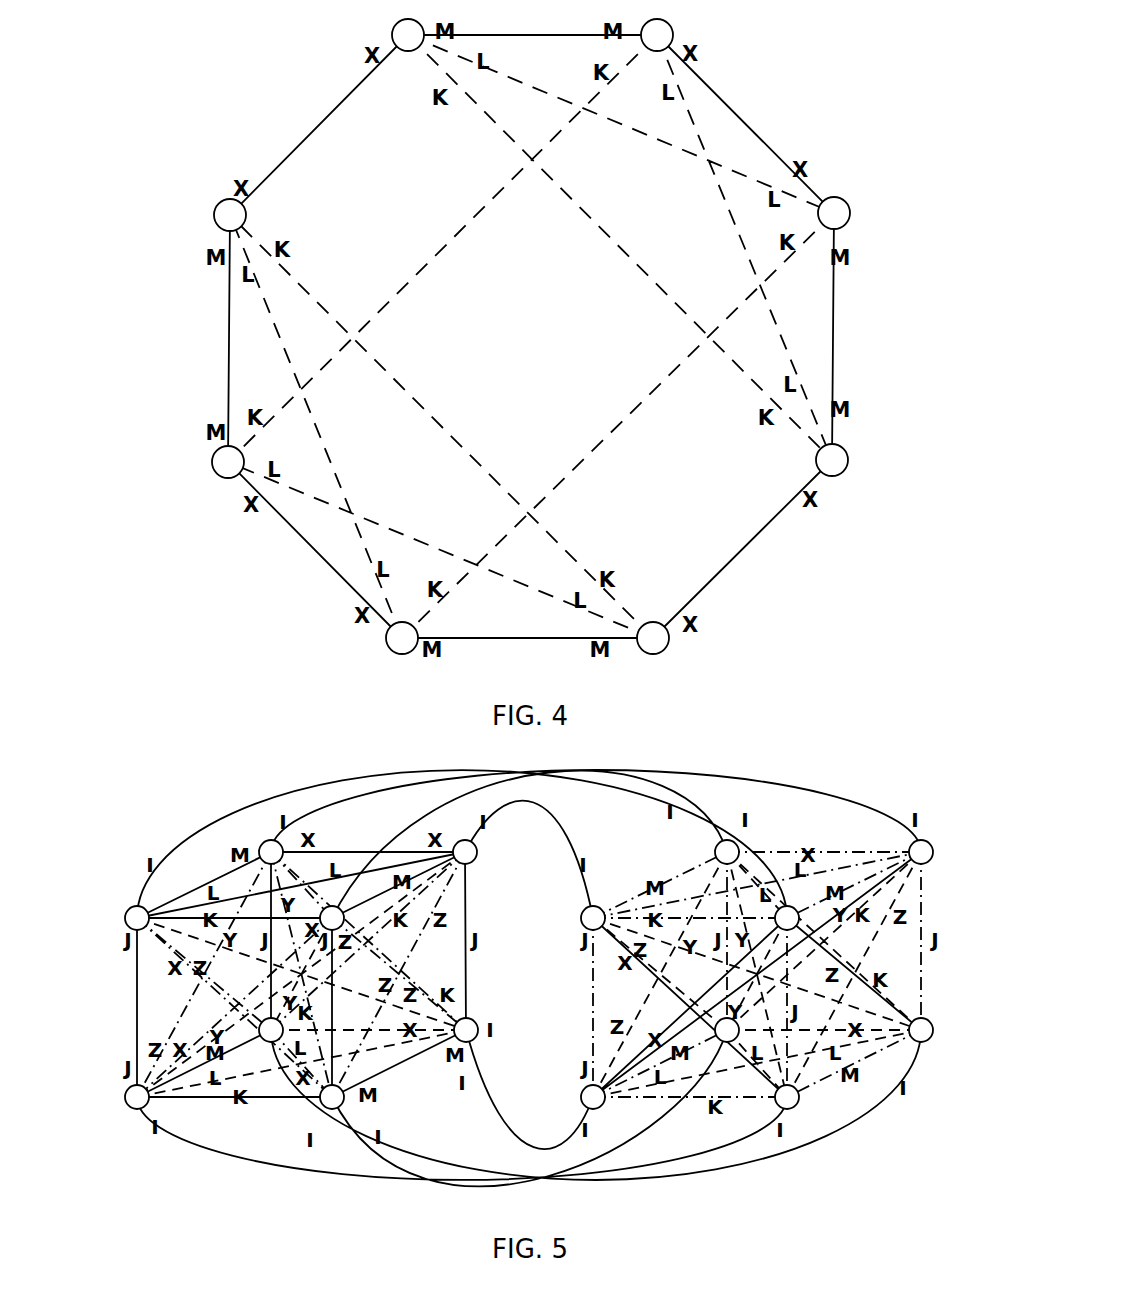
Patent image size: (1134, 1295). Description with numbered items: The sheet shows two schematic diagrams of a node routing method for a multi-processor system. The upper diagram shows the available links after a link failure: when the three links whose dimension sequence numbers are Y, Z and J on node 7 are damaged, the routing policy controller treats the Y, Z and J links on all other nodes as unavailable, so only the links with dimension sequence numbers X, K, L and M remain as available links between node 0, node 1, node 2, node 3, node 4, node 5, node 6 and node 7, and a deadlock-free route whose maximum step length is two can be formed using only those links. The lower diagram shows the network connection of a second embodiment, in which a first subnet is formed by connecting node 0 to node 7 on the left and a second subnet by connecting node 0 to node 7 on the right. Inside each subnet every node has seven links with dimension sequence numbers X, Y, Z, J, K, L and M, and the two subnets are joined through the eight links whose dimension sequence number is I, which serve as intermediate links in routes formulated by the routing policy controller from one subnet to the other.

In FIG. 4, the node 0 is at (408, 35).
In FIG. 5, the node 0 is at (365, 918).
In FIG. 4, the node 1 is at (657, 35).
In FIG. 5, the node 1 is at (499, 852).
In FIG. 4, the node 2 is at (834, 213).
In FIG. 5, the node 2 is at (693, 852).
In FIG. 4, the node 3 is at (832, 460).
In FIG. 5, the node 3 is at (559, 918).
In FIG. 4, the node 4 is at (653, 638).
In FIG. 5, the node 4 is at (365, 1097).
In FIG. 4, the node 5 is at (402, 638).
In FIG. 5, the node 5 is at (499, 1030).
In FIG. 4, the node 6 is at (228, 462).
In FIG. 5, the node 6 is at (693, 1030).
In FIG. 4, the node 7 is at (230, 215).
In FIG. 5, the node 7 is at (559, 1097).